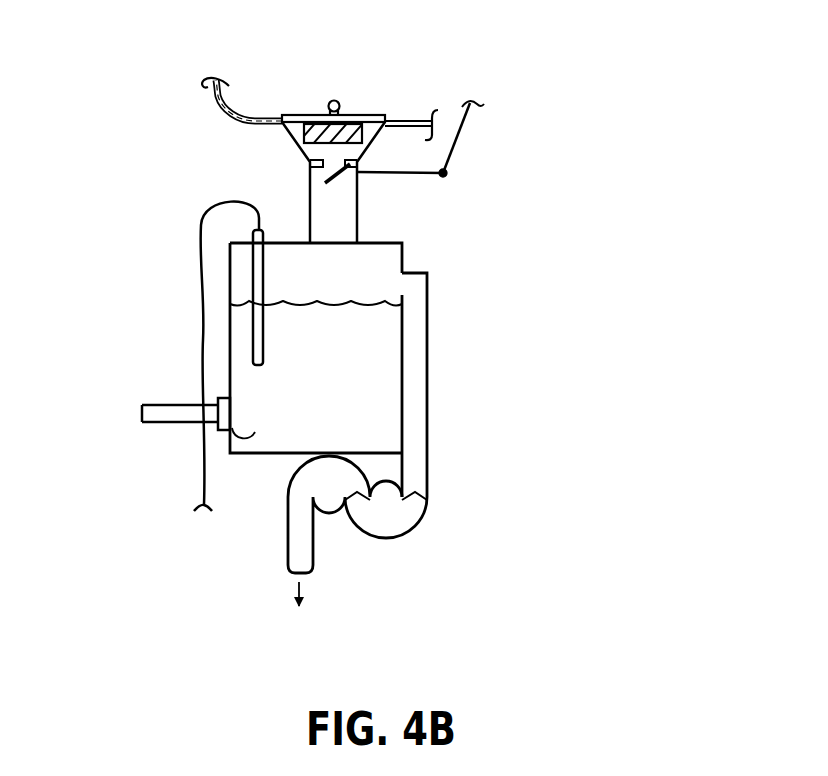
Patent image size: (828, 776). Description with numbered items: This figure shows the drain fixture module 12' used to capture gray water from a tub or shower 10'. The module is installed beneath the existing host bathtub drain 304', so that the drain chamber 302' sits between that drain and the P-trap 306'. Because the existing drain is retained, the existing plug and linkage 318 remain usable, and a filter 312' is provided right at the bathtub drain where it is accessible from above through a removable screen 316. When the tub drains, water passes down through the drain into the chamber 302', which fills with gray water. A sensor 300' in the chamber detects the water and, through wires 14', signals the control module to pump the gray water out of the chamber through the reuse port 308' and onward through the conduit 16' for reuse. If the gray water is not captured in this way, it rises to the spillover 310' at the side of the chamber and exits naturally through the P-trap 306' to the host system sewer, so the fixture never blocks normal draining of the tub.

The tub or shower 10' is at (333, 104).
The drain fixture module 12' is at (307, 356).
The wires 14' is at (185, 356).
The conduit 16' is at (141, 420).
The sensor 300' is at (180, 297).
The drain chamber 302' is at (343, 388).
The host bathtub drain 304' is at (286, 182).
The P-trap 306' is at (400, 563).
The reuse port 308' is at (183, 440).
The spillover 310' is at (468, 385).
The filter 312' is at (297, 85).
The removable screen 316 is at (361, 115).
The plug and linkage 318 is at (467, 133).